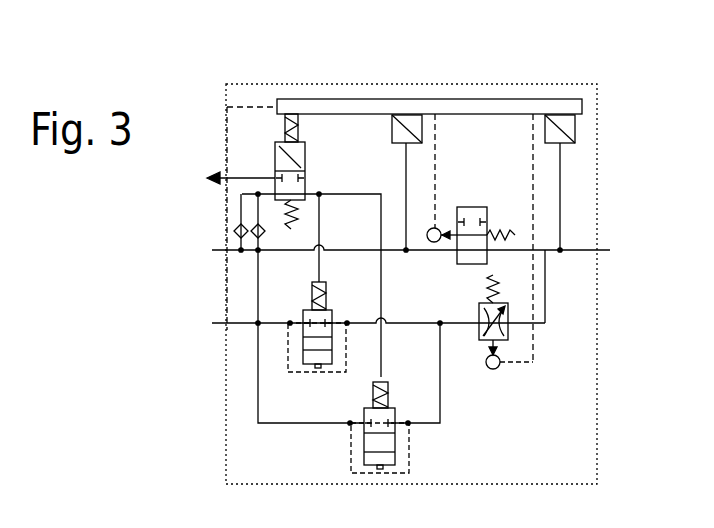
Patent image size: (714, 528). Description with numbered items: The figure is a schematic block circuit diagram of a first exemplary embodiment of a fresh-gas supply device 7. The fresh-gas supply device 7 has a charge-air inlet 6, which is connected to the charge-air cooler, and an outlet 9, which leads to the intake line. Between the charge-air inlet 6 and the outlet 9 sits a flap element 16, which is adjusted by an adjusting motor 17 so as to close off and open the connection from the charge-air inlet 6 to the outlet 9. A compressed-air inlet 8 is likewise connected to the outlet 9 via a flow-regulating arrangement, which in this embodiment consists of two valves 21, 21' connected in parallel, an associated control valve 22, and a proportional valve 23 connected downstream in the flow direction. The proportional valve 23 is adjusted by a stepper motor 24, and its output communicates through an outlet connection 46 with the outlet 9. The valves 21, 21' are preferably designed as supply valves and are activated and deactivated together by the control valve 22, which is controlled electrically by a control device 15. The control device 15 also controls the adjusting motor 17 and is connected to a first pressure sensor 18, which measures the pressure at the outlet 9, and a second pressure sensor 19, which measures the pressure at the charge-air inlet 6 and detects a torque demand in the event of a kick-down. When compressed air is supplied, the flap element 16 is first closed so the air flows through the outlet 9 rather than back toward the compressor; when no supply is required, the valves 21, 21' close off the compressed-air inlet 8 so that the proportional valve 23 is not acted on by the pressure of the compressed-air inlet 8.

The fresh-gas supply device 7 is at (333, 70).
The control device 15 is at (298, 104).
The control valve 22 is at (290, 150).
The charge-air inlet 6 is at (222, 250).
The outlet 9 is at (606, 250).
The compressed-air inlet 8 is at (220, 323).
The valve 21 is at (265, 342).
The valve 21' is at (340, 427).
The second pressure sensor 19 is at (406, 117).
The first pressure sensor 18 is at (558, 117).
The adjusting motor 17 is at (437, 228).
The flap element 16 is at (489, 226).
The outlet connection 46 is at (545, 303).
The proportional valve 23 is at (508, 340).
The stepper motor 24 is at (496, 369).